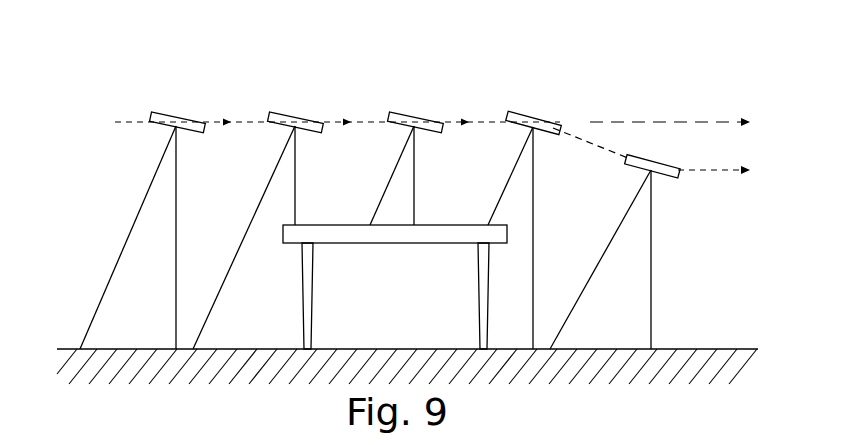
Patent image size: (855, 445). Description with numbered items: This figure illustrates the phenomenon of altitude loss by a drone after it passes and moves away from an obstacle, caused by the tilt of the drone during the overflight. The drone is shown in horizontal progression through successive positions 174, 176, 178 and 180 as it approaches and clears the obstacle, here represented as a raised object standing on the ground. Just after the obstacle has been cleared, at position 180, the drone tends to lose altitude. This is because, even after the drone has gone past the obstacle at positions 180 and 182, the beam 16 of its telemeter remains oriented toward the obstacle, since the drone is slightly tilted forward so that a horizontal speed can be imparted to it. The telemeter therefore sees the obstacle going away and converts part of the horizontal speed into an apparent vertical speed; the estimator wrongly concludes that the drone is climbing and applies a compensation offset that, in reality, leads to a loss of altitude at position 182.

The beam 16 is at (508, 180).
The successive position 174 is at (172, 118).
The successive position 176 is at (297, 118).
The successive position 178 is at (417, 118).
The position 180 is at (535, 118).
The position 182 is at (653, 161).